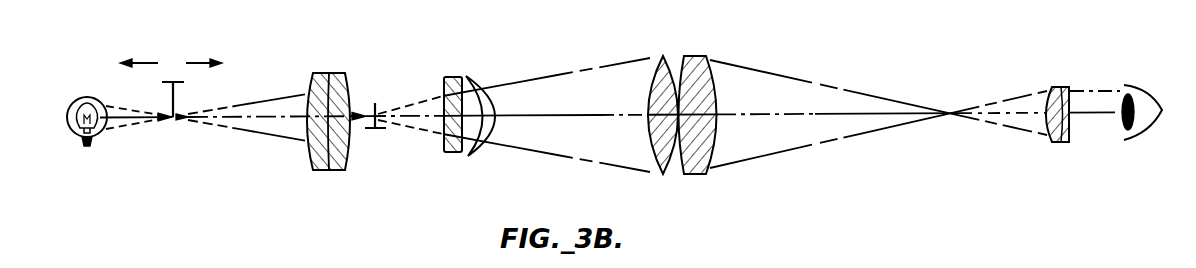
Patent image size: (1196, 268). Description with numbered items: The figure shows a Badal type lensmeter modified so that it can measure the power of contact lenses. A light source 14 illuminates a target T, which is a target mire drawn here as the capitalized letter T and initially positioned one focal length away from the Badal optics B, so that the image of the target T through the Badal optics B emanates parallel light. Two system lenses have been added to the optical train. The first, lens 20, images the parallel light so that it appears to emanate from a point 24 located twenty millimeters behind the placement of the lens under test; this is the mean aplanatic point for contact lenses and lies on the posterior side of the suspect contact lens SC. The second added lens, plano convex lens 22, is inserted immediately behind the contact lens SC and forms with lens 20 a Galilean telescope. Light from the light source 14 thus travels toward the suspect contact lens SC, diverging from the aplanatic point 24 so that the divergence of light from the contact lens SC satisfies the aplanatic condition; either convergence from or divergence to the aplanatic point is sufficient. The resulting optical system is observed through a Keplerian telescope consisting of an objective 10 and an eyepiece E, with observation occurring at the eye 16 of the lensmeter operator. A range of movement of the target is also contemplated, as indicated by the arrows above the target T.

The light source 14 is at (94, 98).
The target T is at (173, 119).
The Badal optics B is at (331, 72).
The aplanatic point 24 is at (374, 101).
The plano convex lens 22 is at (454, 76).
The suspect contact lens SC is at (470, 157).
The system lens 20 is at (668, 59).
The objective 10 is at (699, 56).
The eyepiece E is at (1058, 87).
The eye 16 is at (1141, 93).